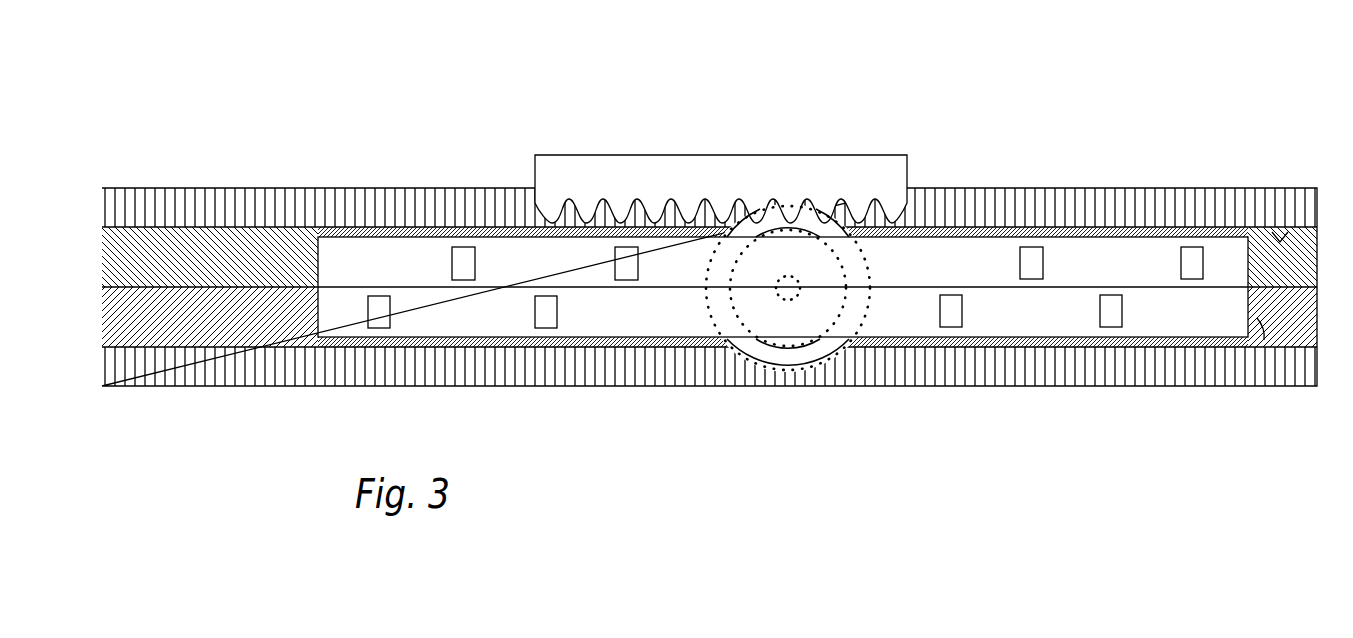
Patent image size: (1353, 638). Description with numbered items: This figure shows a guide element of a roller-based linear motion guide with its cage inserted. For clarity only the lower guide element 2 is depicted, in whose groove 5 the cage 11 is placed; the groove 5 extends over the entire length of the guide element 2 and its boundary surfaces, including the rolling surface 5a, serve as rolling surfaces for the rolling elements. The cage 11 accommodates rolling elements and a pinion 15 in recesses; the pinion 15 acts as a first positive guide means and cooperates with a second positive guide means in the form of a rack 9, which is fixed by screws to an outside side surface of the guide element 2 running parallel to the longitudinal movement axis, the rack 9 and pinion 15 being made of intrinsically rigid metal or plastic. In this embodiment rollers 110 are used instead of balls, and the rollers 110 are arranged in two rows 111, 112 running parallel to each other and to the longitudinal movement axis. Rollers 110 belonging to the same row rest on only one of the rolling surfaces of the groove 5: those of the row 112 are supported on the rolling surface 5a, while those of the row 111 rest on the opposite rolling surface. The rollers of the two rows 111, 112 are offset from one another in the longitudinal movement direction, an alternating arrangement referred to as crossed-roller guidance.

The lower guide element 2 is at (1142, 174).
The groove 5 is at (119, 319).
The rolling surface 5a is at (1275, 187).
The rack 9 is at (752, 148).
The cage 11 is at (1262, 330).
The pinion 15 is at (830, 357).
The rollers 110 is at (476, 263).
The row 111 is at (418, 263).
The row 112 is at (1144, 312).